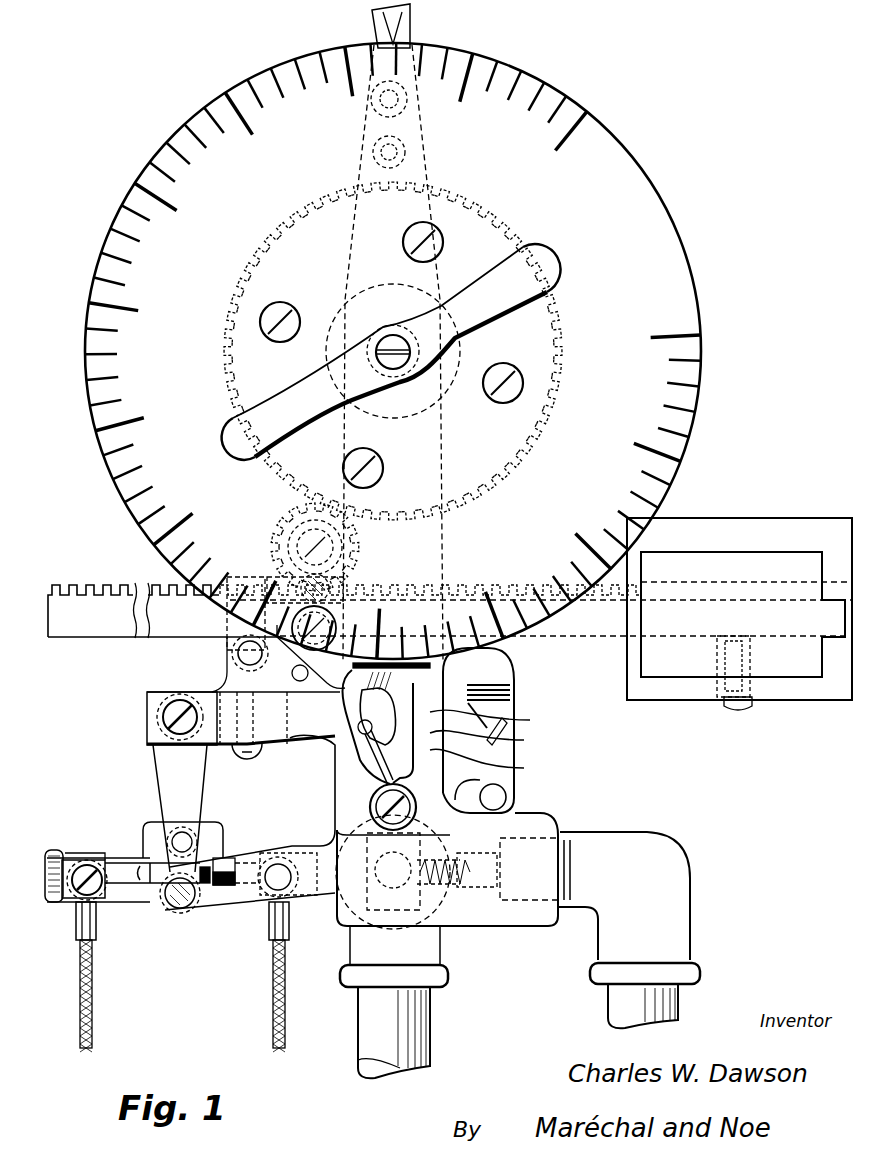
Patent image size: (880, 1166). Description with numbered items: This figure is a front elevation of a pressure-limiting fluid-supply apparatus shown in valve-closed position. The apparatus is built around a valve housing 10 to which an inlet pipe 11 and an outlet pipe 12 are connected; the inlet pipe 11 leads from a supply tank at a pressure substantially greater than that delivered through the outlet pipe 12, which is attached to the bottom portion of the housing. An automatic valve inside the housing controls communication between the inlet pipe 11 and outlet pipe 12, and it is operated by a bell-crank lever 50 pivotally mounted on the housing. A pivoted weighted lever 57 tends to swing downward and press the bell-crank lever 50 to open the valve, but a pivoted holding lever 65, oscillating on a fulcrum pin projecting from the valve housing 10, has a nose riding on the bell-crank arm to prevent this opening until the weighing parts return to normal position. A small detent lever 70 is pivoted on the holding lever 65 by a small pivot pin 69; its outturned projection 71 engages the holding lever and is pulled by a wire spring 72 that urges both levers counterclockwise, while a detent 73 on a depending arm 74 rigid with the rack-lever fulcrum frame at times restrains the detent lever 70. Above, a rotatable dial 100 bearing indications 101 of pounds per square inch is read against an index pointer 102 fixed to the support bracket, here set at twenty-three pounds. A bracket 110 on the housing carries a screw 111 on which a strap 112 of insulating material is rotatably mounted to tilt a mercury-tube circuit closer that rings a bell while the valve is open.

The rotatable dial 100 is at (618, 150).
The indications 101 is at (465, 102).
The index pointer 102 is at (412, 26).
The pivoted weighted lever 57 is at (590, 622).
The bell-crank lever 50 is at (163, 772).
The pivoted holding lever 65 is at (346, 773).
The small pivot pin 69 is at (505, 662).
The small detent lever 70 is at (522, 702).
The outturned projection 71 is at (524, 748).
The wire spring 72 is at (524, 762).
The detent 73 is at (518, 728).
The depending arm 74 is at (508, 793).
The valve housing 10 is at (483, 912).
The inlet pipe 11 is at (658, 852).
The outlet pipe 12 is at (378, 1031).
The bracket 110 is at (227, 900).
The screw 111 is at (185, 895).
The strap 112 is at (138, 893).